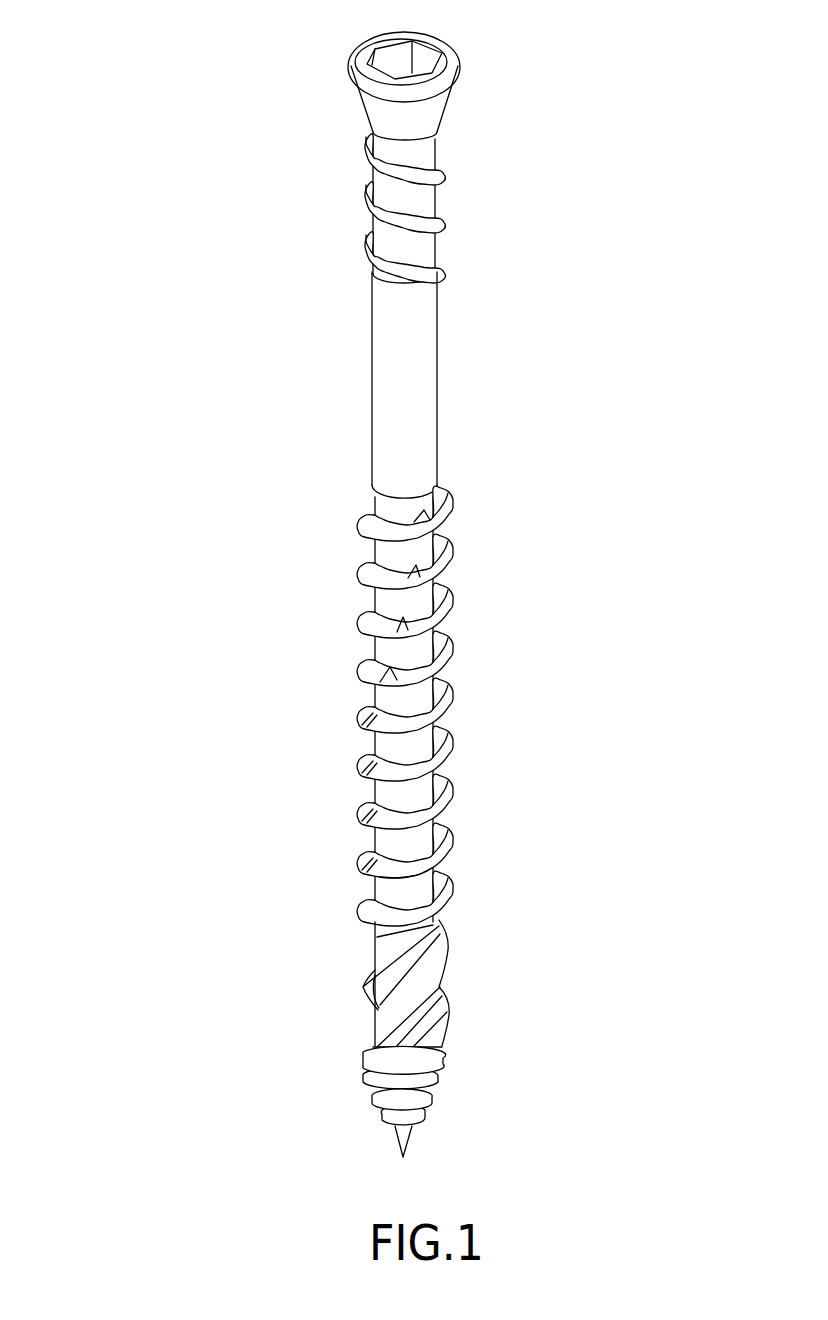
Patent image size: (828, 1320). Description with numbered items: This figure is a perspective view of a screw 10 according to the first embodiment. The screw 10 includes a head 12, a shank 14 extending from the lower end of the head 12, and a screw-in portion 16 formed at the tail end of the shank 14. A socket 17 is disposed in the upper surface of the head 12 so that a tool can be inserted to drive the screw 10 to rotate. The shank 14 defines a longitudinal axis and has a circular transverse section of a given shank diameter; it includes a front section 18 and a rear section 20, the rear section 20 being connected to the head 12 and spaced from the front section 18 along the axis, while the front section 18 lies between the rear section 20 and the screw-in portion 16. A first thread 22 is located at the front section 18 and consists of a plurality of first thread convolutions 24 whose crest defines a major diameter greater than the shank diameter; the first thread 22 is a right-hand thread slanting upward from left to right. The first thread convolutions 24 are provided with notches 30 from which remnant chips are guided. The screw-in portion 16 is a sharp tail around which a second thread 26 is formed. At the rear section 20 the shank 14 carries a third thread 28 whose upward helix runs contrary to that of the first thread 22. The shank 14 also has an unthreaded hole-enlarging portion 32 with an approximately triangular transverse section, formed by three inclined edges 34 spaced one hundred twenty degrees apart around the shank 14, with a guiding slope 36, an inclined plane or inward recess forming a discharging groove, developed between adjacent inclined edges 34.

The screw 10 is at (282, 549).
The head 12 is at (448, 83).
The shank 14 is at (428, 440).
The screw-in portion 16 is at (410, 1138).
The socket 17 is at (425, 55).
The front section 18 is at (387, 895).
The rear section 20 is at (420, 256).
The first thread 22 is at (448, 748).
The first thread convolutions 24 is at (440, 848).
The second thread 26 is at (427, 1072).
The third thread 28 is at (367, 202).
The notches 30 is at (373, 680).
The hole-enlarging portion 32 is at (497, 966).
The inclined edges 34 is at (365, 988).
The guiding slope 36 is at (380, 1011).